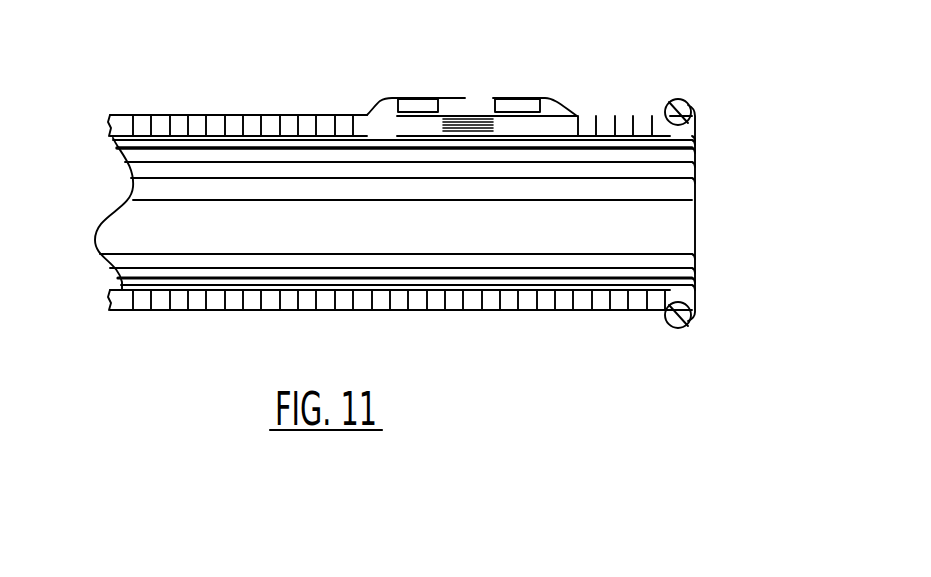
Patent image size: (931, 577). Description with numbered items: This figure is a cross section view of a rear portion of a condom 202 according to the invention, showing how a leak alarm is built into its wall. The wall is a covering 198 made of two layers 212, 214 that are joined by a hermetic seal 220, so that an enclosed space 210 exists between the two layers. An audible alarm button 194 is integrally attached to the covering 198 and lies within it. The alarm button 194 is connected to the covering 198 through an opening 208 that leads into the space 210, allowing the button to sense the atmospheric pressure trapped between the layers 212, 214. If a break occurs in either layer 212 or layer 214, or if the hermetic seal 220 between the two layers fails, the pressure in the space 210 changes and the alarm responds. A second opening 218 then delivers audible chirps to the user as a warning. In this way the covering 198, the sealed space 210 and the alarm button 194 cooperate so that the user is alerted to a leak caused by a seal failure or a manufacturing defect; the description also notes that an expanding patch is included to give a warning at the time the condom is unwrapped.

The audible alarm button 194 is at (530, 97).
The covering 198 is at (163, 115).
The condom 202 is at (695, 113).
The opening 208 is at (368, 127).
The space 210 is at (287, 118).
The layer 212 is at (125, 113).
The layer 214 is at (110, 140).
The opening 218 is at (475, 100).
The hermetic seal 220 is at (670, 113).